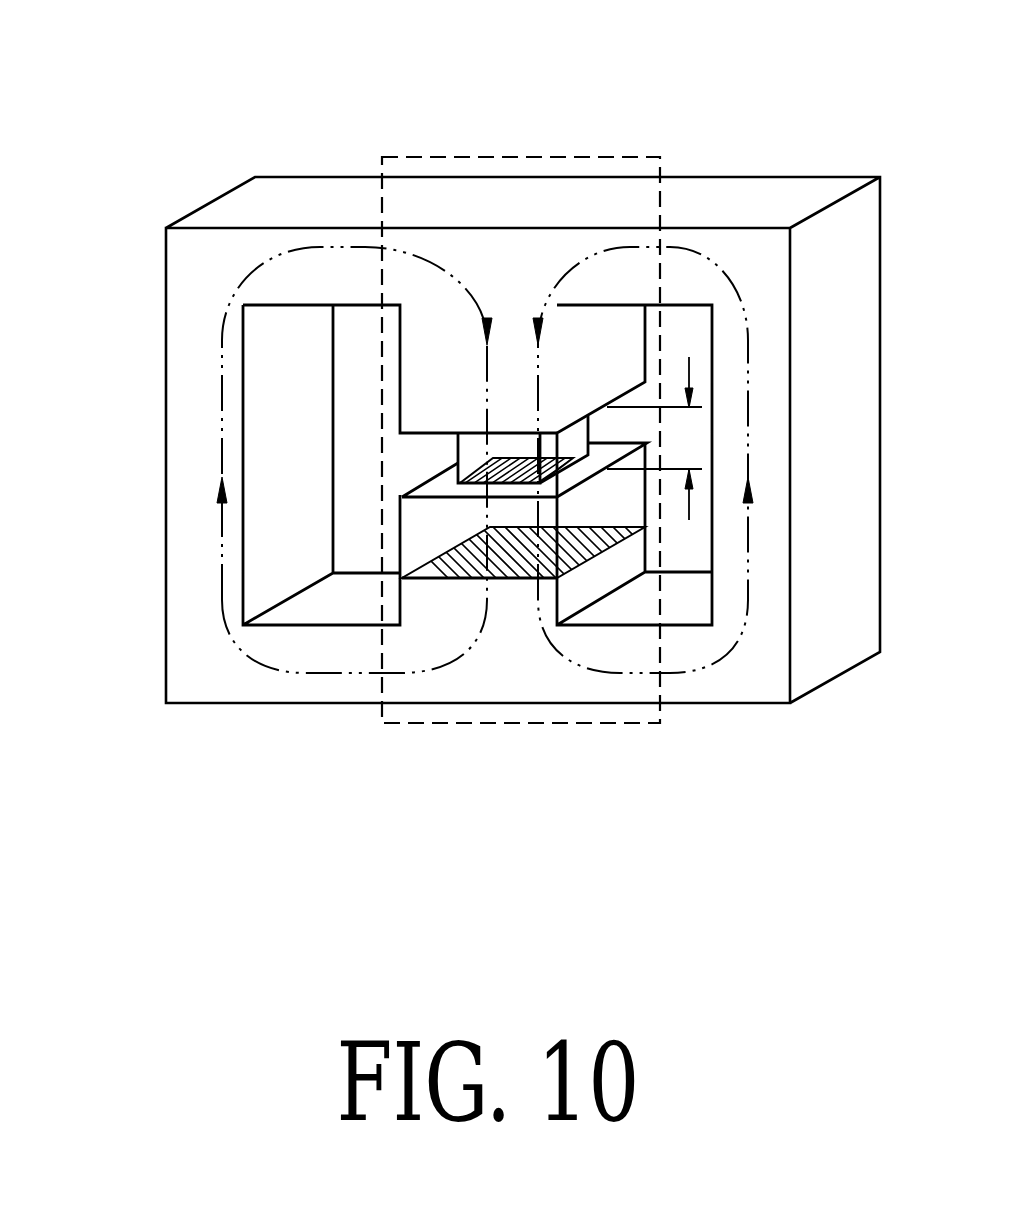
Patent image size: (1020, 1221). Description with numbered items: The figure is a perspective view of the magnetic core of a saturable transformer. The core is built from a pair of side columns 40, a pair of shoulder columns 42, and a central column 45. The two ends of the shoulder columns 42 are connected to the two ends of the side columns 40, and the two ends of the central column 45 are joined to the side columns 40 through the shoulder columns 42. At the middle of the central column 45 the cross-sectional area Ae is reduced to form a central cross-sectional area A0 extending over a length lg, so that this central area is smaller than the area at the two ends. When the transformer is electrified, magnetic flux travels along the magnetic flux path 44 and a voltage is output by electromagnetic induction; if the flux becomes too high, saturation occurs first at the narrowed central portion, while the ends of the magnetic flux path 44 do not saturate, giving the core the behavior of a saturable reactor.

The side columns 40 is at (203, 390).
The shoulder columns 42 is at (335, 658).
The magnetic flux path 44 is at (564, 653).
The central column 45 is at (601, 723).
The central cross-sectional area A0 is at (518, 458).
The cross-sectional area Ae is at (515, 570).
The length lg is at (658, 438).